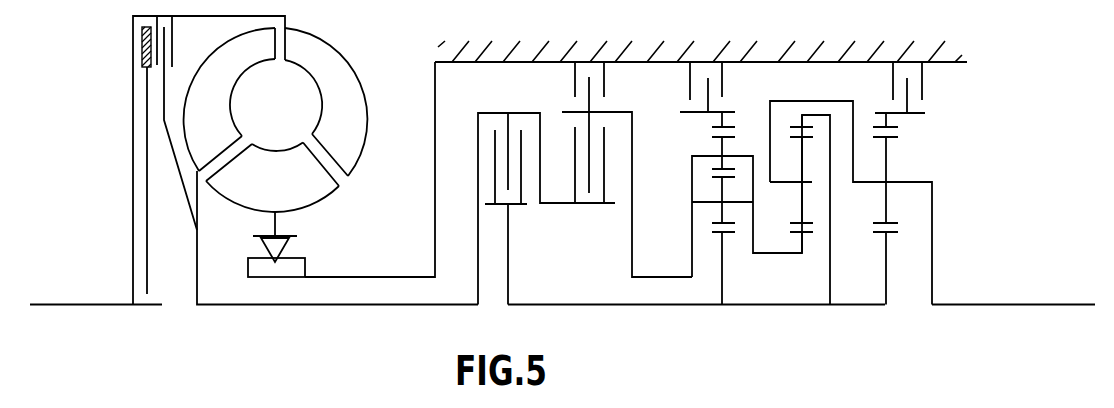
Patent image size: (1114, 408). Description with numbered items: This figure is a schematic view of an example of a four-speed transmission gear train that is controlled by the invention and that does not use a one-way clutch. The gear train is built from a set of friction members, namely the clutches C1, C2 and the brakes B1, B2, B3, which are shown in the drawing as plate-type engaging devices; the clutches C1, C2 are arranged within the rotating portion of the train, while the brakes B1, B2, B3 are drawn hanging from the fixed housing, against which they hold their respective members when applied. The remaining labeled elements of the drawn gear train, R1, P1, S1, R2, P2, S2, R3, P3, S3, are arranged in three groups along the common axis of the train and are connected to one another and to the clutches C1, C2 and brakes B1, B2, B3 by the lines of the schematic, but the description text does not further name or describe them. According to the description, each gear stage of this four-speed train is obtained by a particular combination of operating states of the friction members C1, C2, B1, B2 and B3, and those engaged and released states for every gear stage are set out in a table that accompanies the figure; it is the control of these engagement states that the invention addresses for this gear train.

The brake B1 is at (605, 78).
The brake B2 is at (724, 78).
The brake B3 is at (922, 78).
The clutch C1 is at (515, 205).
The clutch C2 is at (563, 205).
The first ring gear R1 is at (735, 136).
The first planet carrier P1 is at (728, 186).
The first sun gear S1 is at (729, 242).
The second ring gear R2 is at (807, 145).
The second planet carrier P2 is at (851, 203).
The second sun gear S2 is at (807, 243).
The third ring gear R3 is at (893, 146).
The third planet carrier P3 is at (892, 173).
The third sun gear S3 is at (889, 243).